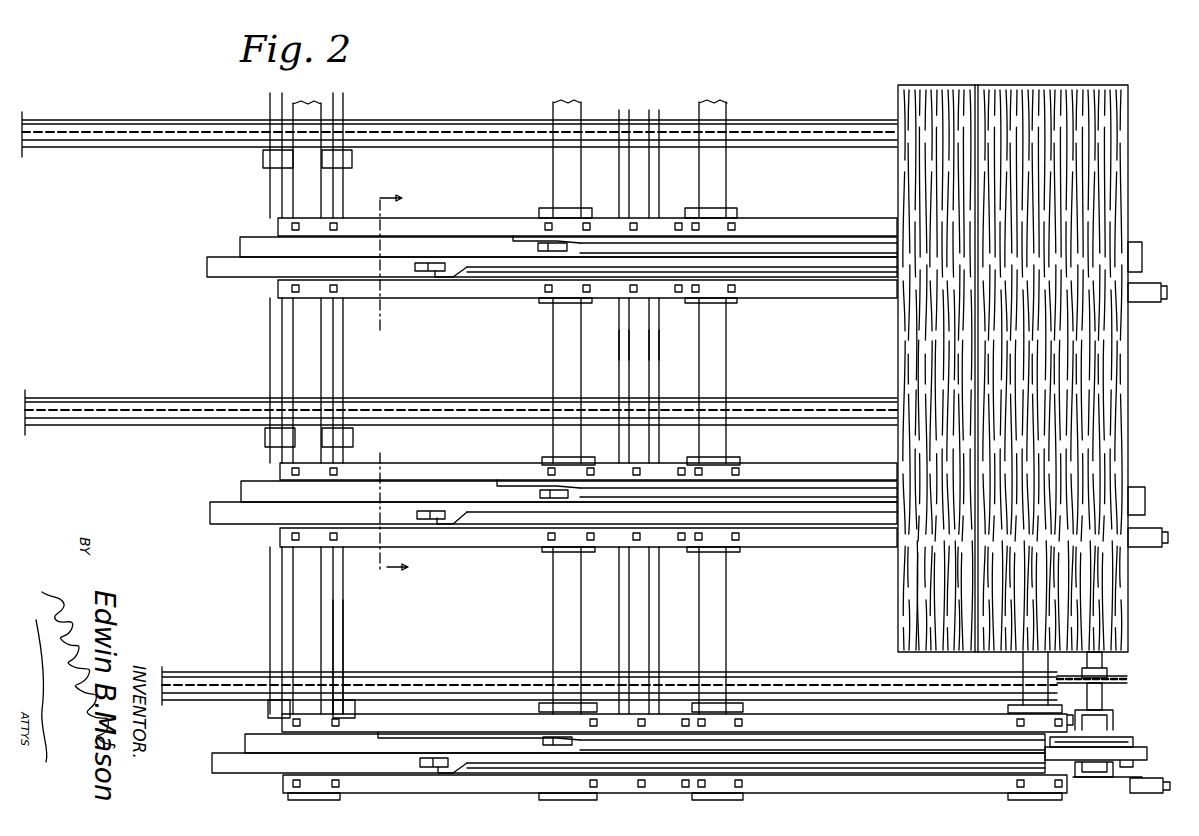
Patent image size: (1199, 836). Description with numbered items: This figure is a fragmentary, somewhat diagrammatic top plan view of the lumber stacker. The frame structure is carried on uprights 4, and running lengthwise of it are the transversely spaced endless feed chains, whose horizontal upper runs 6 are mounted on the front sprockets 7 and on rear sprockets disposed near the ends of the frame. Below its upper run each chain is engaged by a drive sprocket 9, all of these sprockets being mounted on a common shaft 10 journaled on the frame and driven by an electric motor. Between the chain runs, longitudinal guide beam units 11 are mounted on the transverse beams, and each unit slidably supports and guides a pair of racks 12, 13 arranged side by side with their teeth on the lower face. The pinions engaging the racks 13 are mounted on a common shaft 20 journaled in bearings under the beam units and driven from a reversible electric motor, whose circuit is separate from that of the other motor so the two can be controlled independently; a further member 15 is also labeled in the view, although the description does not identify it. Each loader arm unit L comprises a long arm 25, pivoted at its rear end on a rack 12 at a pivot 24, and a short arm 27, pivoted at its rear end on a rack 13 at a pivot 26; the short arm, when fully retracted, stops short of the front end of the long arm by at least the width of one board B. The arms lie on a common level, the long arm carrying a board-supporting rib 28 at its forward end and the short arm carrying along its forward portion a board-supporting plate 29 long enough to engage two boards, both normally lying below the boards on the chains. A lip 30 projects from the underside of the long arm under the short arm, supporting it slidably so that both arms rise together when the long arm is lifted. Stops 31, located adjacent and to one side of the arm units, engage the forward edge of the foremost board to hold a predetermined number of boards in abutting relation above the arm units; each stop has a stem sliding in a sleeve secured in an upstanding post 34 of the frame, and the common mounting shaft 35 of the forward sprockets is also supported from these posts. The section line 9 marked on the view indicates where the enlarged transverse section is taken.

The uprights 4 is at (307, 604).
The upper runs 6 is at (768, 130).
The front sprockets 7 is at (1110, 675).
The drive sprocket 9 is at (390, 388).
The common shaft 10 is at (343, 652).
The longitudinal guide beam units 11 is at (510, 280).
The rack 12 is at (443, 243).
The rack 13 is at (246, 268).
The post 15 is at (657, 345).
The common shaft 20 is at (620, 352).
The pivot 24 is at (560, 252).
The long arm 25 is at (827, 245).
The pivot 26 is at (437, 277).
The short arm 27 is at (770, 265).
The board-supporting rib 28 is at (1110, 740).
The board-supporting plate 29 is at (820, 265).
The lip 30 is at (1137, 752).
The stops 31 is at (1143, 300).
The upstanding post 34 is at (1110, 715).
The common mounting shaft 35 is at (1095, 655).
The board B is at (915, 555).
The loader arm unit L is at (775, 242).